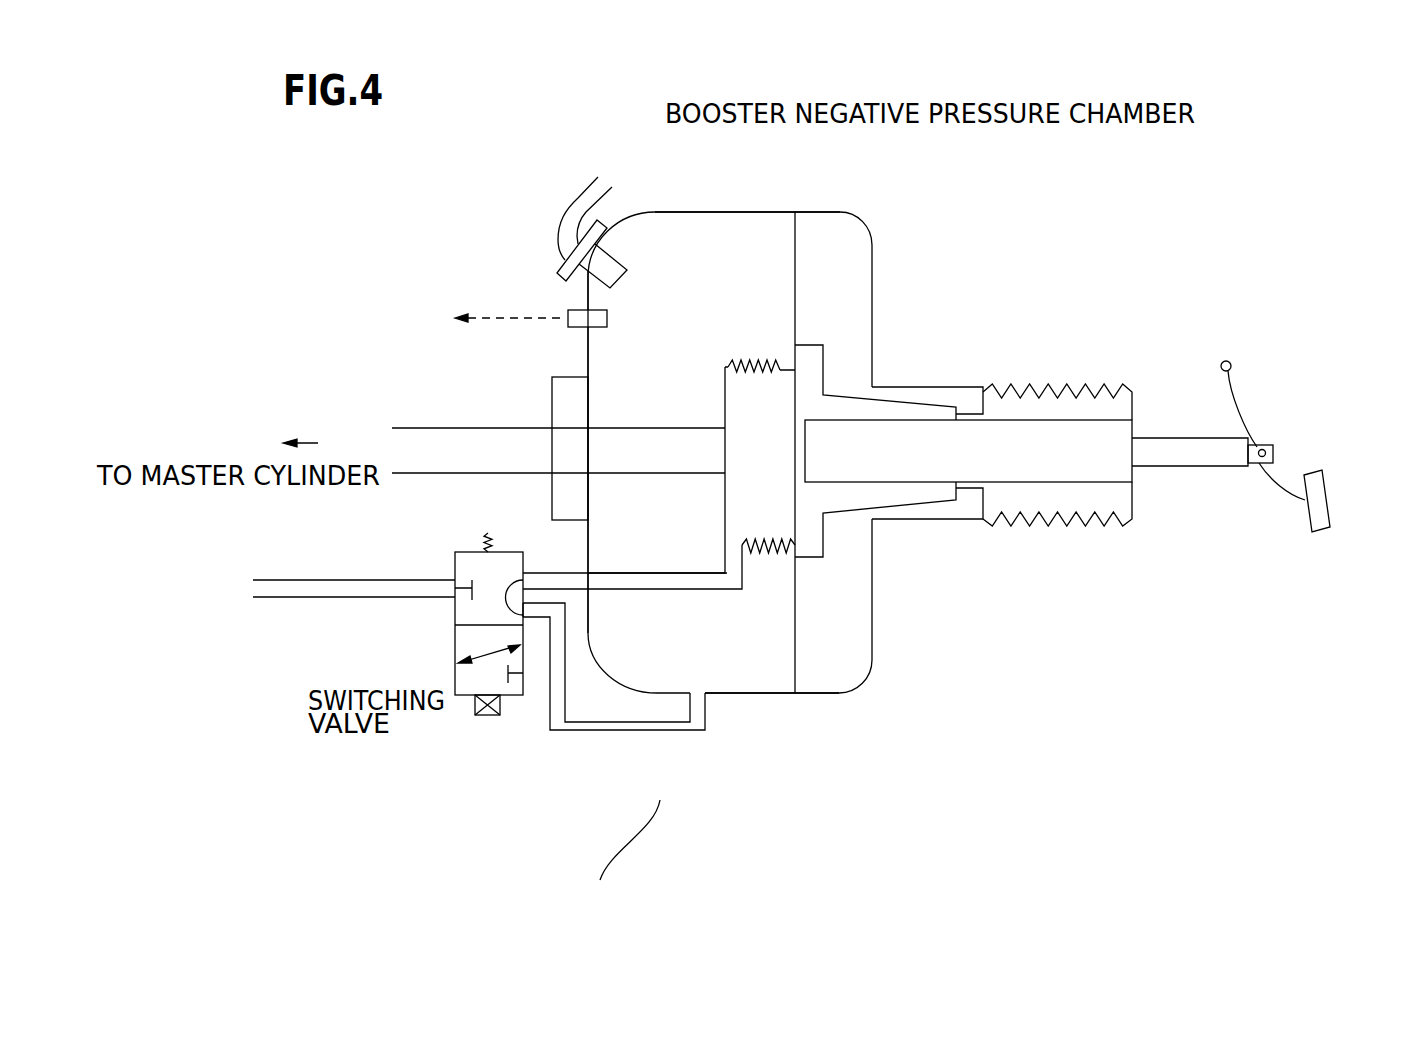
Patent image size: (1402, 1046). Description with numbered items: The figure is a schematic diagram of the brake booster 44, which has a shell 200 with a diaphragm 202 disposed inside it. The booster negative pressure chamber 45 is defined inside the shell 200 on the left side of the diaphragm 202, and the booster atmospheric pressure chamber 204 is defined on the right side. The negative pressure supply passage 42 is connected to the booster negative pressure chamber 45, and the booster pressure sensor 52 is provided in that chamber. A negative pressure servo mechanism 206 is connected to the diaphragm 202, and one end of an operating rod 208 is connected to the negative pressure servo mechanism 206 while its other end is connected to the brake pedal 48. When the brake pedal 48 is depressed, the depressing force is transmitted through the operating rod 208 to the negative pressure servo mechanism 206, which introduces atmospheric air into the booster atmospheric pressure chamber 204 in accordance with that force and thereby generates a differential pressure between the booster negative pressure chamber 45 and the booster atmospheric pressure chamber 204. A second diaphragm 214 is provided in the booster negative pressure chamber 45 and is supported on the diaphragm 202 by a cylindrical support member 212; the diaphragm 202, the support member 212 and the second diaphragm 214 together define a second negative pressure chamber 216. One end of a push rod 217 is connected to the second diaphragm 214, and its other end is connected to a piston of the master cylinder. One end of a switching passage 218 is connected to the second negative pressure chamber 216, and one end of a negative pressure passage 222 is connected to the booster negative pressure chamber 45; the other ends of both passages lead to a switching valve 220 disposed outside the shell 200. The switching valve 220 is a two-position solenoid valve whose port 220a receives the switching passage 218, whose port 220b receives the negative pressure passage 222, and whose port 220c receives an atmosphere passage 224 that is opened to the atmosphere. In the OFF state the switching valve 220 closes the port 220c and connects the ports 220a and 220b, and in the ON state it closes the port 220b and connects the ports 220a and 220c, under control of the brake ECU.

The negative pressure supply passage 42 is at (577, 195).
The brake booster 44 is at (765, 765).
The booster negative pressure chamber 45 is at (697, 227).
The brake pedal 48 is at (1320, 530).
The booster pressure sensor 52 is at (568, 313).
The shell 200 is at (858, 688).
The diaphragm 202 is at (807, 232).
The booster atmospheric pressure chamber 204 is at (850, 252).
The negative pressure servo mechanism 206 is at (827, 407).
The operating rod 208 is at (1040, 432).
The support member 212 is at (762, 547).
The second diaphragm 214 is at (725, 403).
The second negative pressure chamber 216 is at (767, 522).
The push rod 217 is at (435, 428).
The switching passage 218 is at (567, 573).
The switching valve 220 is at (453, 637).
The port 220a is at (526, 552).
The port 220b is at (523, 620).
The port 220c is at (453, 577).
The negative pressure passage 222 is at (588, 728).
The atmosphere passage 224 is at (323, 588).